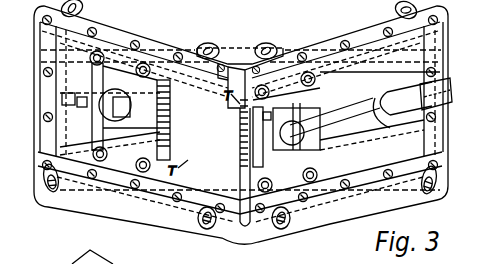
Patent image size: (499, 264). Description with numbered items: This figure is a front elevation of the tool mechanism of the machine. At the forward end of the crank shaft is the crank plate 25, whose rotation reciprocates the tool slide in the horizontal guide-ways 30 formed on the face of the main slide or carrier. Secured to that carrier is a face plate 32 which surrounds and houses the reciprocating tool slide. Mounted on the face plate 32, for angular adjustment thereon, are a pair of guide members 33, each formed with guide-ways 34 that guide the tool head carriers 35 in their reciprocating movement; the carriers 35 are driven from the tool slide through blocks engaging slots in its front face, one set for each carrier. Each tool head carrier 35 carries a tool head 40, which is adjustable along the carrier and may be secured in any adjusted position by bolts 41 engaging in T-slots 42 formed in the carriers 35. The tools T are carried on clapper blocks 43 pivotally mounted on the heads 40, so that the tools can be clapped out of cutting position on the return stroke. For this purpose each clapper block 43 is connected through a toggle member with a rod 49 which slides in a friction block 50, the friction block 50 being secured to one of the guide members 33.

The face plate 32 is at (424, 10).
The guide members 33 is at (140, 46).
The guide-ways 34 is at (365, 44).
The tool head carriers 35 is at (337, 154).
The crank plate 25 is at (233, 46).
The tool head 40 is at (280, 92).
The bolts 41 is at (300, 90).
The T-slots 42 is at (338, 73).
The clapper blocks 43 is at (336, 101).
The rod 49 is at (381, 112).
The friction block 50 is at (452, 106).
The horizontal guide-ways 30 is at (113, 263).